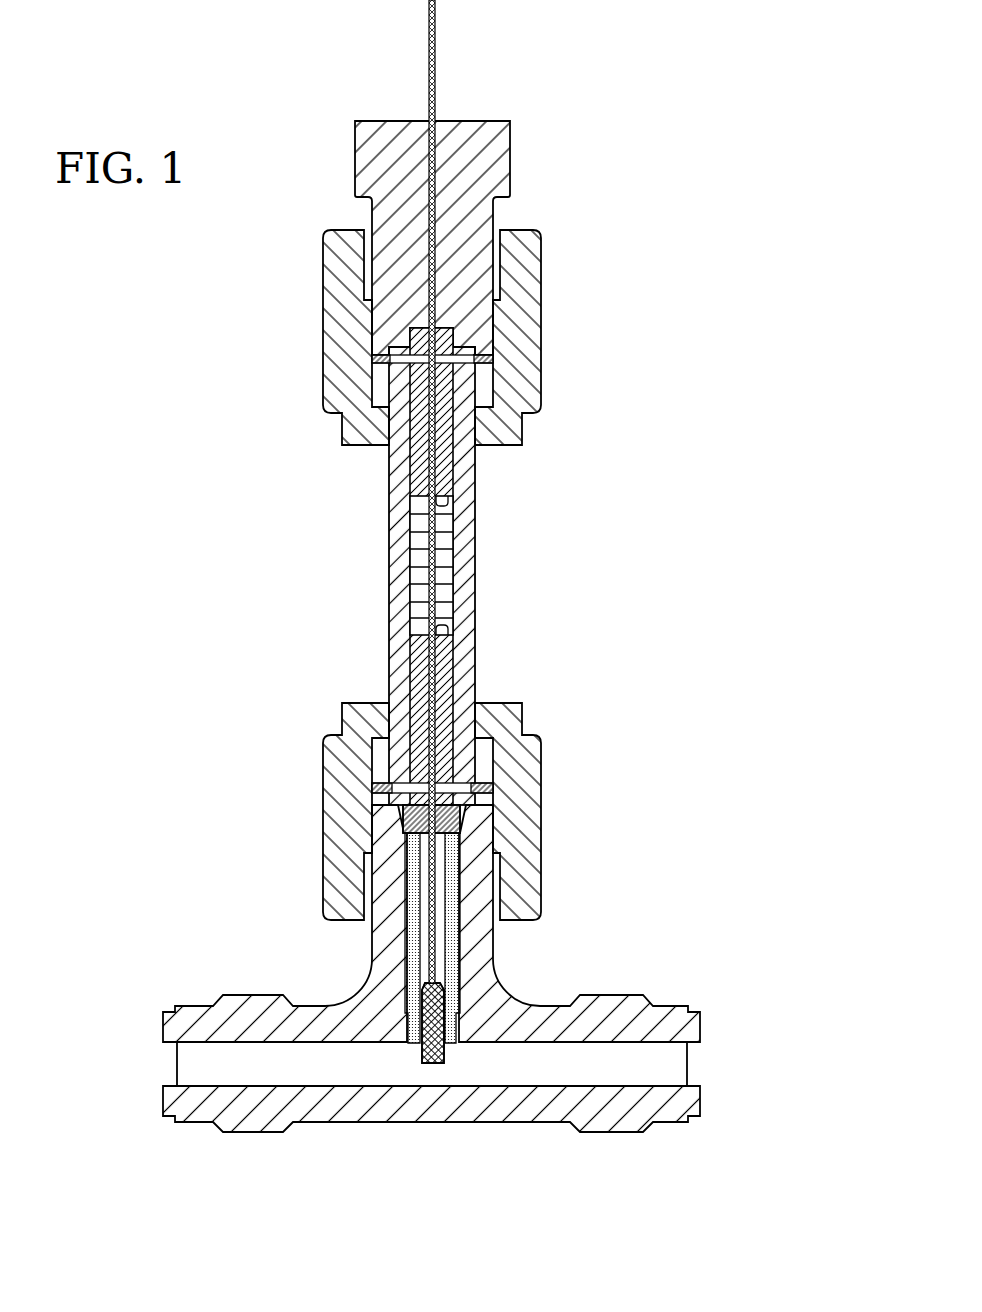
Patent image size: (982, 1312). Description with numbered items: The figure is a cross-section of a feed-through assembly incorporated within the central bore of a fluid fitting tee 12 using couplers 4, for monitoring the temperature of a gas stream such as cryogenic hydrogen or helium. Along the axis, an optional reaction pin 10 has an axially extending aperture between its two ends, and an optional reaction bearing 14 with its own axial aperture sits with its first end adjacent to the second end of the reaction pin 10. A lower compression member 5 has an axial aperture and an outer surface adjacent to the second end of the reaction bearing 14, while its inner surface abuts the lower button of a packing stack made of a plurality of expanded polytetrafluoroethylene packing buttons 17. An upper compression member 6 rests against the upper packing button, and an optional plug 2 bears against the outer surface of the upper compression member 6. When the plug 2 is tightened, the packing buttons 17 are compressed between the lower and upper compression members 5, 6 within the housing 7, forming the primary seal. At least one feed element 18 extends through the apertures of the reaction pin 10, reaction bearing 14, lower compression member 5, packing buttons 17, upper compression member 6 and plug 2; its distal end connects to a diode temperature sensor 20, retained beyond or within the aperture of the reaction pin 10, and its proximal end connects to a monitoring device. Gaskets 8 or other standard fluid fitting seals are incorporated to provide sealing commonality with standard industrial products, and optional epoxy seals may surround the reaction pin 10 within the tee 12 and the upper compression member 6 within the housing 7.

The plug 2 is at (485, 121).
The couplers 4 is at (541, 345).
The lower compression member 5 is at (413, 623).
The upper compression member 6 is at (413, 505).
The housing 7 is at (463, 510).
The gaskets 8 is at (375, 358).
The reaction pin 10 is at (413, 948).
The fluid fitting tee 12 is at (617, 995).
The reaction bearing 14 is at (405, 808).
The packing buttons 17 is at (445, 557).
The feed element 18 is at (428, 38).
The sensor 20 is at (422, 1060).